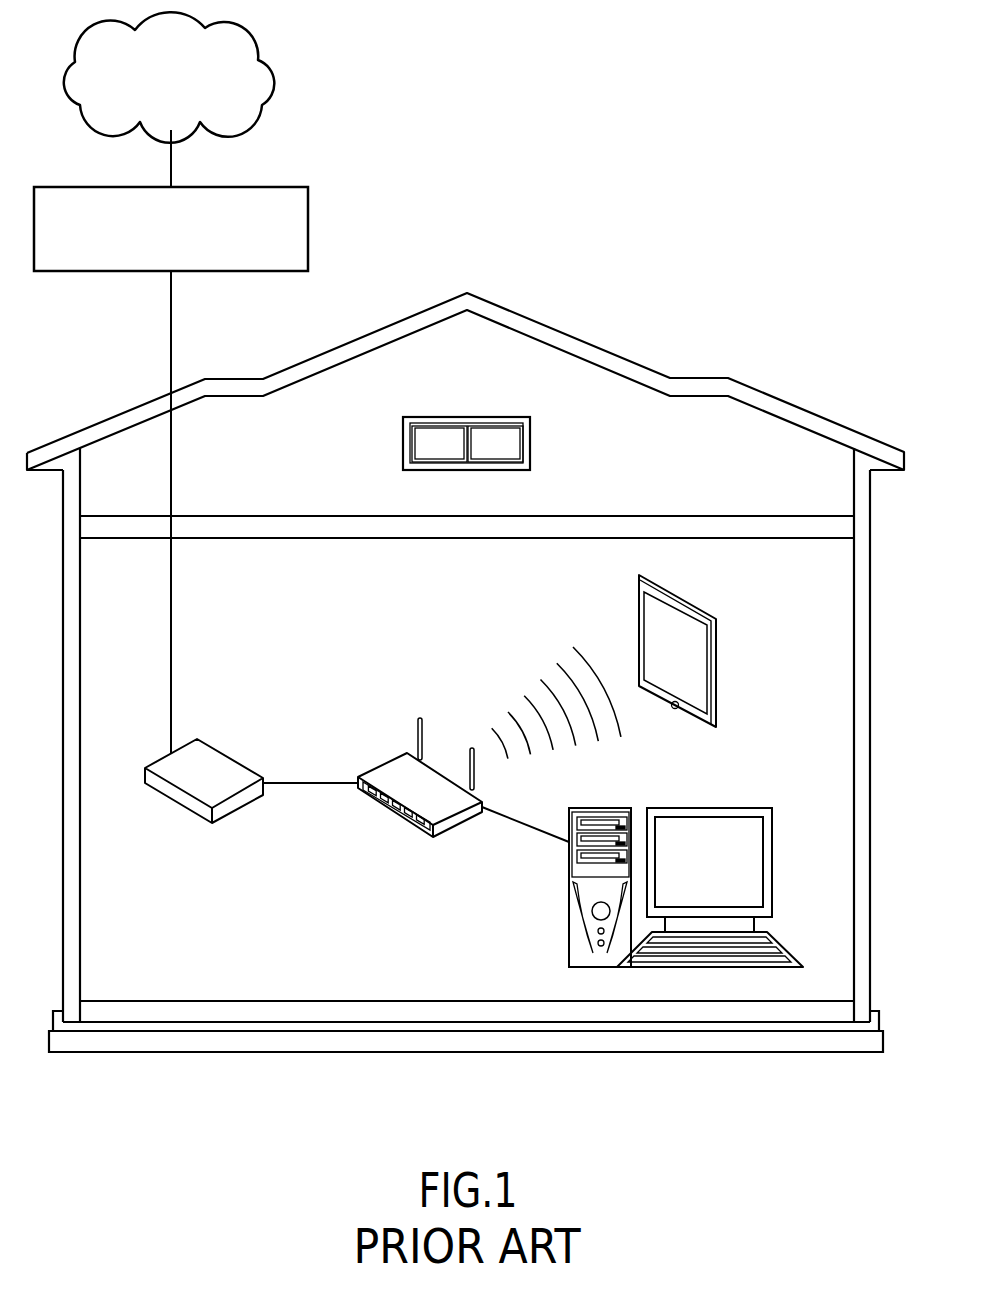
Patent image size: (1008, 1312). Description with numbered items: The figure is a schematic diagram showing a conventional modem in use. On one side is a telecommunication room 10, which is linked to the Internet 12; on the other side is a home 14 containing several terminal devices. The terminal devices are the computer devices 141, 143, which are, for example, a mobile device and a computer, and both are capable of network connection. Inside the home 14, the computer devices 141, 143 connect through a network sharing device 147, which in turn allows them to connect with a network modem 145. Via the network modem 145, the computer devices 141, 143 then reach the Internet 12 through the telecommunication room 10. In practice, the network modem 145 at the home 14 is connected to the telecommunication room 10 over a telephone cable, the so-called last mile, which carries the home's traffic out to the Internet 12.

The telecommunication room 10 is at (308, 228).
The Internet 12 is at (274, 58).
The home 14 is at (568, 336).
The computer device 141 is at (637, 605).
The computer device 143 is at (748, 808).
The network modem 145 is at (232, 757).
The network sharing device 147 is at (376, 768).